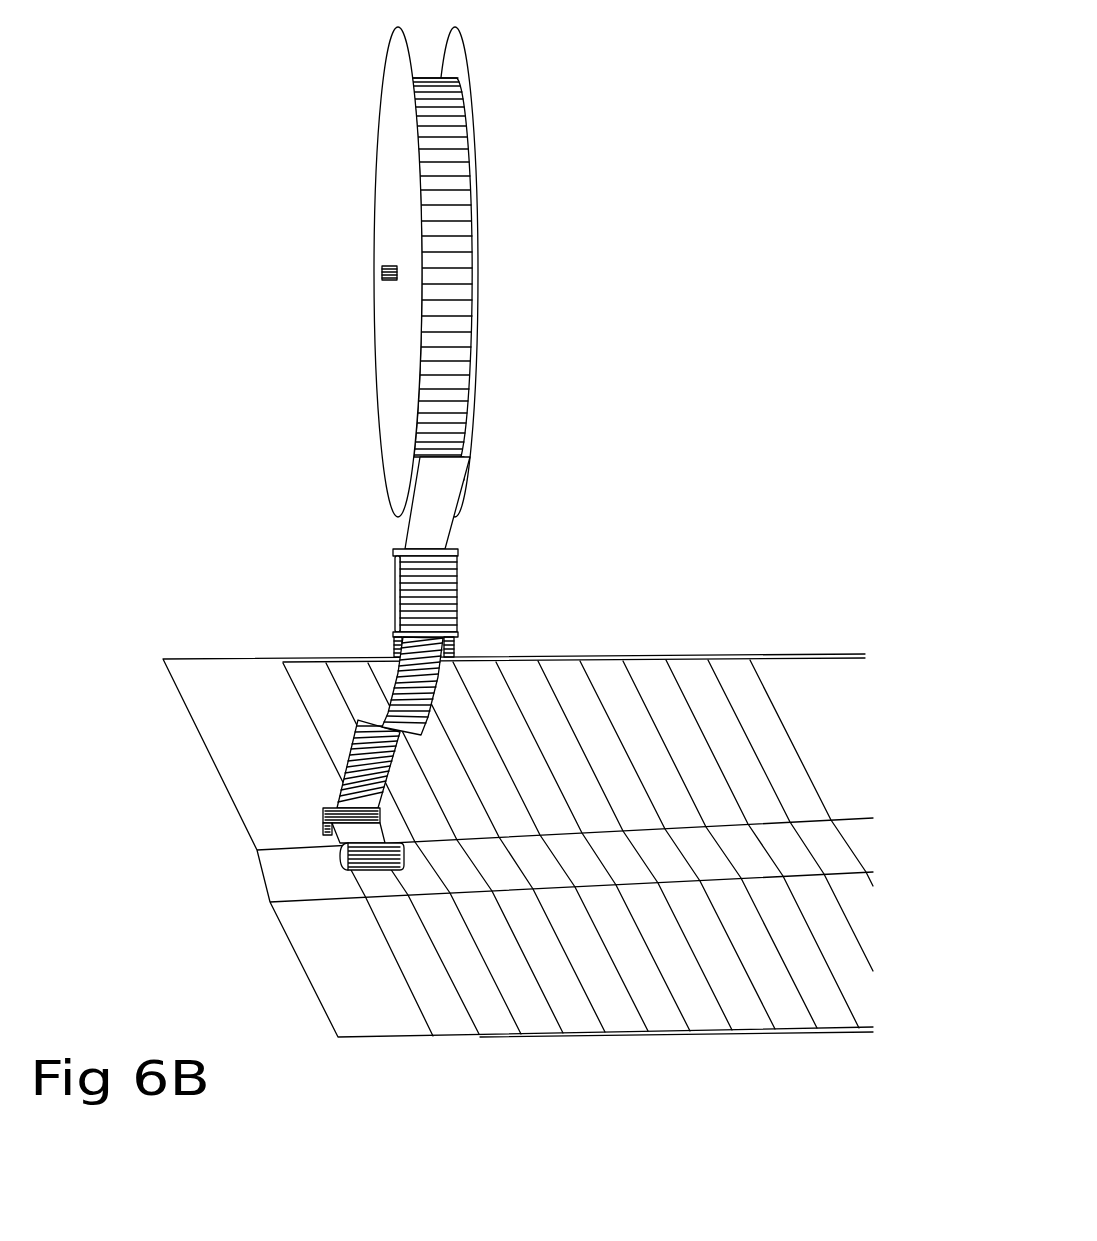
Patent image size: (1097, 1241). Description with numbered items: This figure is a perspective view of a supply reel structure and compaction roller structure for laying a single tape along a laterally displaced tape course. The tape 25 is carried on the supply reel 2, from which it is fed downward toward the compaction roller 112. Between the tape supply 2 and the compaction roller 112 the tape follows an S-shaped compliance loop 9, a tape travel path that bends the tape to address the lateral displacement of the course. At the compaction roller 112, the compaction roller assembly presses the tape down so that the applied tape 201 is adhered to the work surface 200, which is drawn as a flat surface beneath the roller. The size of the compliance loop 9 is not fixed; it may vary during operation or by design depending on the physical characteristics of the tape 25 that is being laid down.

The supply reel 2 is at (381, 105).
The tape 25 is at (393, 535).
The S-shaped compliance loop 9 is at (355, 722).
The compaction roller 112 is at (343, 860).
The applied tape 201 is at (395, 915).
The work surface 200 is at (385, 1007).